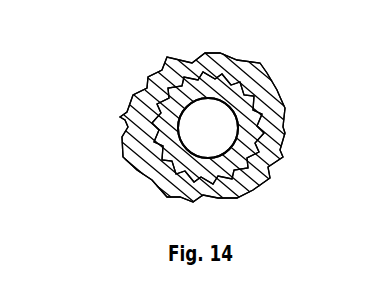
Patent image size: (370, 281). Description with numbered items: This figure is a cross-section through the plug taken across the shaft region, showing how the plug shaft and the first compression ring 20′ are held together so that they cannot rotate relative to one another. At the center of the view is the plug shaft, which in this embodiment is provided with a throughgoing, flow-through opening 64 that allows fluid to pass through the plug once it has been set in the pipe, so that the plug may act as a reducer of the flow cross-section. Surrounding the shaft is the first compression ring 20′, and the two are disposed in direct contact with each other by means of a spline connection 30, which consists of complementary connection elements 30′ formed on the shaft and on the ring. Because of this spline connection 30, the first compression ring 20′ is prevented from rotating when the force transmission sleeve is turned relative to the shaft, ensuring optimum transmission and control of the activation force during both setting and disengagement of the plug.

The first compression ring 20′ is at (163, 72).
The spline connection 30 is at (110, 119).
The connection element 30′ is at (193, 78).
The flow-through opening 64 is at (205, 100).